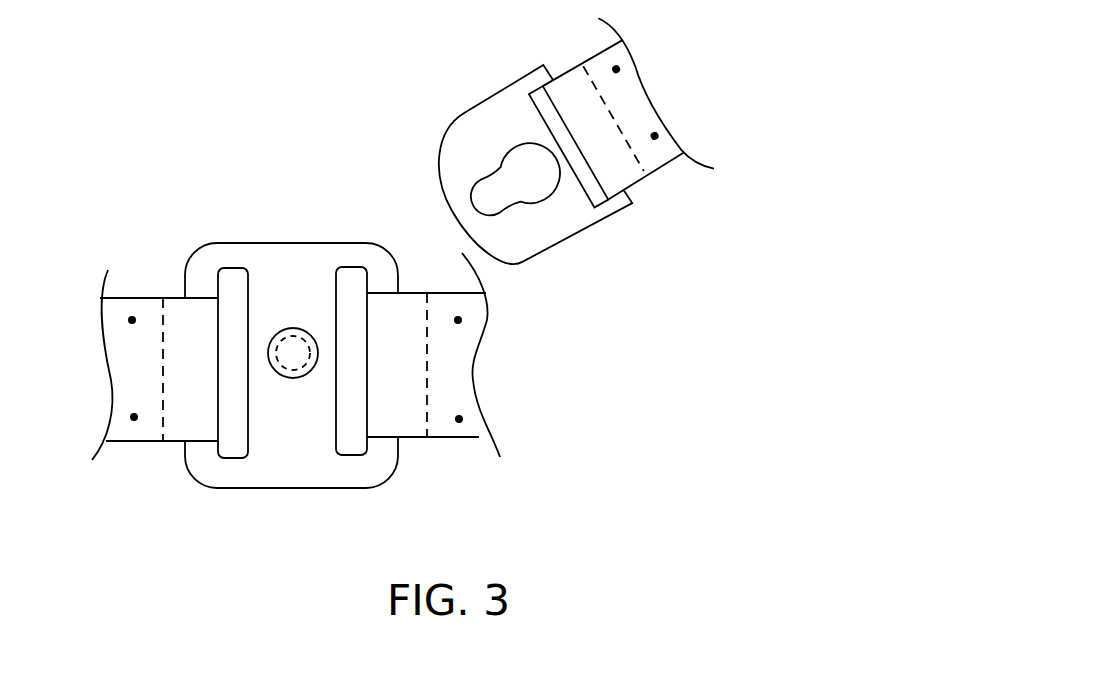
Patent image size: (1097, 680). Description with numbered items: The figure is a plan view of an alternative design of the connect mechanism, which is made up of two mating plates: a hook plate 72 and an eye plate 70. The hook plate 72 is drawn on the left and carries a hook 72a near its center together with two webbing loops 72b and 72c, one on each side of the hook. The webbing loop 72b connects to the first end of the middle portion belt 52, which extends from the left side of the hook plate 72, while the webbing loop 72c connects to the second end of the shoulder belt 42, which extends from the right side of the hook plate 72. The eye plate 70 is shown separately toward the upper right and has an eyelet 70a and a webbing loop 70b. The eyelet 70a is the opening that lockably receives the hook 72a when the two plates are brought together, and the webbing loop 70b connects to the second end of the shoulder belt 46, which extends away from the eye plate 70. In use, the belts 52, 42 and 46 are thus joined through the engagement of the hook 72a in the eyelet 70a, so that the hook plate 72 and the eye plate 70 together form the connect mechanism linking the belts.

The shoulder belt 42 is at (445, 362).
The shoulder belt 46 is at (638, 110).
The middle portion belt 52 is at (127, 383).
The eye plate 70 is at (542, 238).
The eyelet 70a is at (493, 192).
The webbing loop 70b is at (620, 207).
The hook plate 72 is at (290, 265).
The hook 72a is at (297, 352).
The webbing loop 72b is at (205, 260).
The webbing loop 72c is at (380, 262).